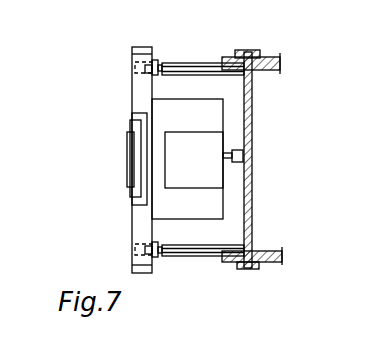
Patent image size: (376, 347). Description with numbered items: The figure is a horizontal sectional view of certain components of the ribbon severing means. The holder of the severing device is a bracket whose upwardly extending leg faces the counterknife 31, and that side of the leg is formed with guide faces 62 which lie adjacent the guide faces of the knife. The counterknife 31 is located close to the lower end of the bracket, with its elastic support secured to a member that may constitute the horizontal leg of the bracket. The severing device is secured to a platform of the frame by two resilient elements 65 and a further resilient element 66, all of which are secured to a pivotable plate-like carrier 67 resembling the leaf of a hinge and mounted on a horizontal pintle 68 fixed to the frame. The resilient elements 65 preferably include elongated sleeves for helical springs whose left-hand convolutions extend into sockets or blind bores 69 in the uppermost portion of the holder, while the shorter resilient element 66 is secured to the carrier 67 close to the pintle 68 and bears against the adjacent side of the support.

The counterknife 31 is at (128, 158).
The guide faces 62 is at (130, 123).
The resilient elements 65 is at (196, 63).
The resilient element 66 is at (238, 162).
The carrier 67 is at (252, 220).
The pintle 68 is at (252, 50).
The blind bores 69 is at (137, 66).